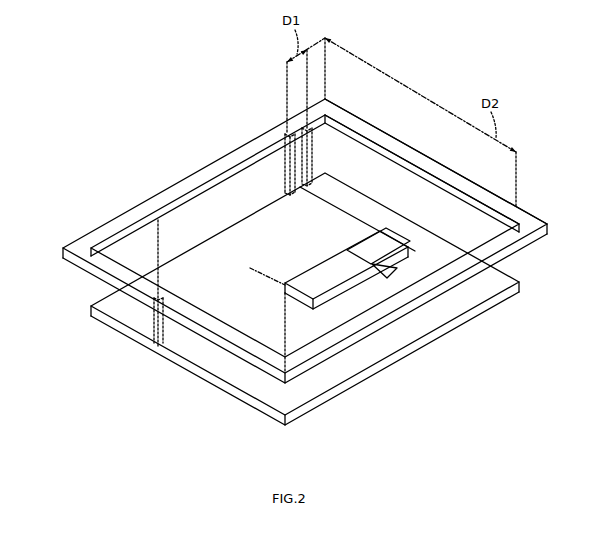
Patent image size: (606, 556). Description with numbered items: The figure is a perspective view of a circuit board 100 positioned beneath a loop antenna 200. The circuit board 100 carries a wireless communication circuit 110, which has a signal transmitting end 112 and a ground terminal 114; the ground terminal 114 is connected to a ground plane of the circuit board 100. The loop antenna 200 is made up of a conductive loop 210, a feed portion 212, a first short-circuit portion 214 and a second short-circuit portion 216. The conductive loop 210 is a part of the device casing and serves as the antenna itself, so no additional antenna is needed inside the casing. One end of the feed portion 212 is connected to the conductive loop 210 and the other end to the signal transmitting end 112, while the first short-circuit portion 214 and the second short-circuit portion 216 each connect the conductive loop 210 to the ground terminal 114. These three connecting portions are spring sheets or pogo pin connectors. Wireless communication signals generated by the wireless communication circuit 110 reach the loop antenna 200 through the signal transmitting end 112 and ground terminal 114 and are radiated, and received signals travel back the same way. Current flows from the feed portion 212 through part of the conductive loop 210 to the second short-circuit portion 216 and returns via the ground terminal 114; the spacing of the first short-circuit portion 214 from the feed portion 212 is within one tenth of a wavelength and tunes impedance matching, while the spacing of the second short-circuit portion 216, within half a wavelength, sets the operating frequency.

The circuit board 100 is at (223, 233).
The wireless communication circuit 110 is at (283, 282).
The signal transmitting end 112 is at (378, 266).
The ground terminal 114 is at (290, 312).
The loop antenna 200 is at (65, 218).
The conductive loop 210 is at (393, 147).
The feed portion 212 is at (320, 158).
The first short-circuit portion 214 is at (286, 138).
The second short-circuit portion 216 is at (155, 338).